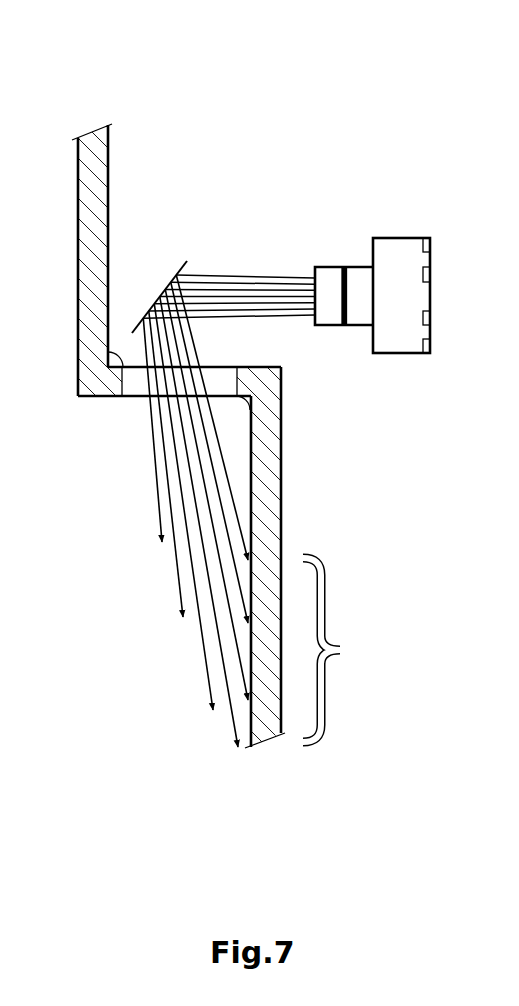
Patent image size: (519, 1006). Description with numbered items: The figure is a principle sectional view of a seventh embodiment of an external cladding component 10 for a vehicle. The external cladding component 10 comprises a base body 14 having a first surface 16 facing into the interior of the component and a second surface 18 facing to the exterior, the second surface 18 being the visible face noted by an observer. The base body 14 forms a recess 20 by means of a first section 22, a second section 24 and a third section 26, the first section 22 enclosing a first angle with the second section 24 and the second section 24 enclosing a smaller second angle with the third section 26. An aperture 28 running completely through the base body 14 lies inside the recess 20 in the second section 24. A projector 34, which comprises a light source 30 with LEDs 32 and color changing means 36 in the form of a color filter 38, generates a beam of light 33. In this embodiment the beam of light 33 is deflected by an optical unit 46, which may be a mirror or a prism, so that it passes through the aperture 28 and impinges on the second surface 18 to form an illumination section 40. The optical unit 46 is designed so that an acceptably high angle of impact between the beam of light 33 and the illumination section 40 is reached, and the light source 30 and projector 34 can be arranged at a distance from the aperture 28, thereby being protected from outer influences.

The external cladding component 10 is at (93, 80).
The base body 14 is at (259, 450).
The first surface 16 is at (110, 143).
The second surface 18 is at (95, 188).
The recess 20 is at (258, 463).
The first section 22 is at (132, 257).
The second section 24 is at (170, 439).
The third section 26 is at (317, 557).
The aperture 28 is at (138, 394).
The light source 30 is at (393, 236).
The LED 32 is at (393, 236).
The beam of light 33 is at (142, 527).
The projector 34 is at (388, 238).
The color changing means 36 is at (325, 222).
The color filter 38 is at (333, 280).
The illumination section 40 is at (344, 650).
The optical unit 46 is at (180, 266).